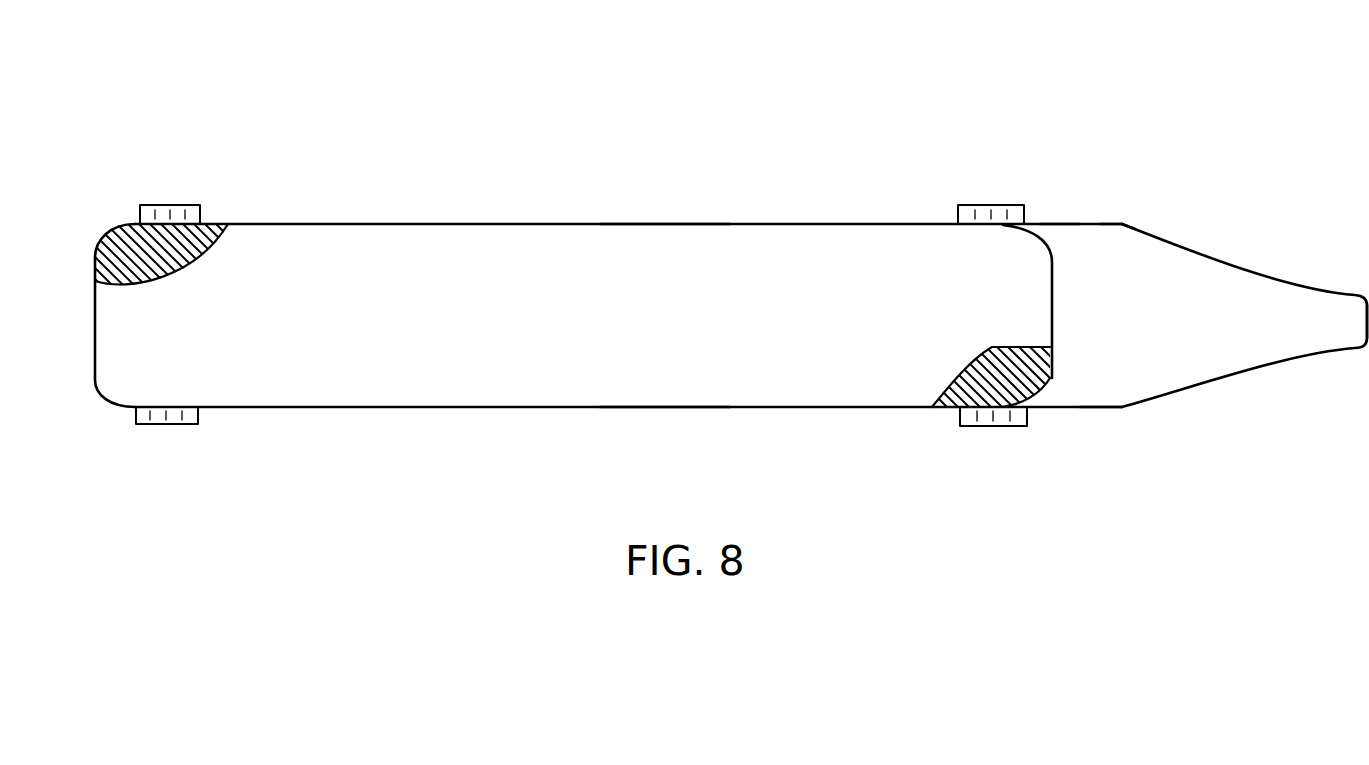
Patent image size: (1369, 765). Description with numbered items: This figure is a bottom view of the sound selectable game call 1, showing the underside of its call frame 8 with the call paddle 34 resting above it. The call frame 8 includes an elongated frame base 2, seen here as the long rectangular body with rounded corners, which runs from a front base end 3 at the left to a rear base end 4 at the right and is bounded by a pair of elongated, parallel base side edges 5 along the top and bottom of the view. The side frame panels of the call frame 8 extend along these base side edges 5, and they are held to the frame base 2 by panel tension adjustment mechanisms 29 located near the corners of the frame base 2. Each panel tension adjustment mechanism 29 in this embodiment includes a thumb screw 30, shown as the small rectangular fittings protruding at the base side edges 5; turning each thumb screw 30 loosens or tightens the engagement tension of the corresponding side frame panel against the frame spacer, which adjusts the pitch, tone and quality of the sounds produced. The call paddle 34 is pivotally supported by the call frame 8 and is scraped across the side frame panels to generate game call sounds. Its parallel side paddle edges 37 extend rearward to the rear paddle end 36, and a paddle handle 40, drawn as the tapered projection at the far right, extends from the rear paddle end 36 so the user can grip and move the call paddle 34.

The sound selectable game call 1 is at (221, 96).
The frame base 2 is at (422, 418).
The front base end 3 is at (93, 312).
The rear base end 4 is at (1052, 306).
The base side edges 5 is at (663, 223).
The call frame 8 is at (446, 200).
The panel tension adjustment mechanism 29 is at (137, 185).
The thumb screw 30 is at (195, 205).
The call paddle 34 is at (1093, 210).
The rear paddle end 36 is at (1135, 226).
The side paddle edges 37 is at (1058, 223).
The paddle handle 40 is at (1325, 348).